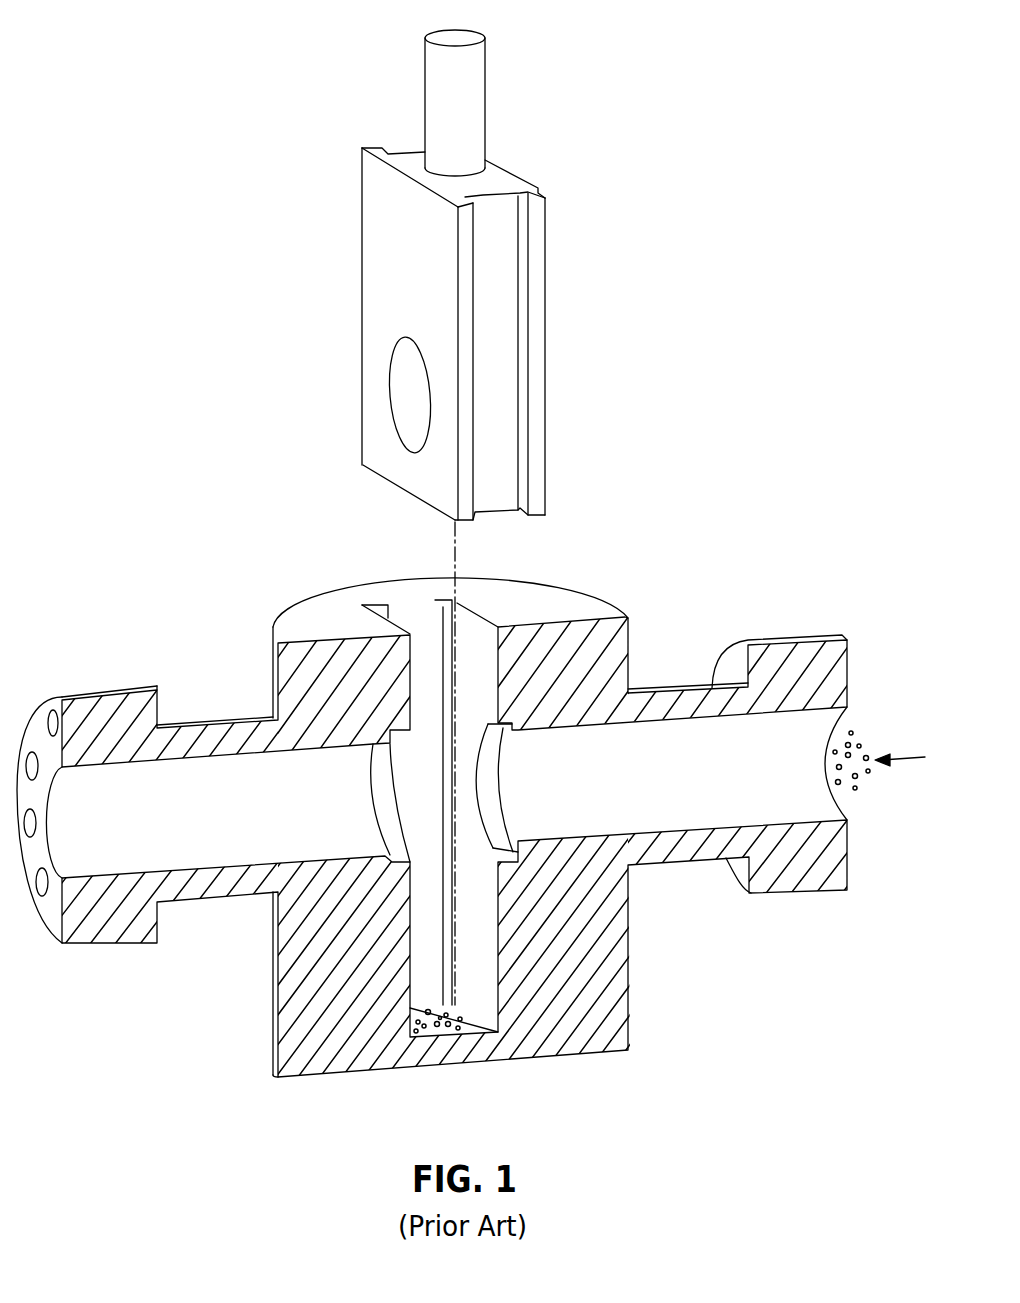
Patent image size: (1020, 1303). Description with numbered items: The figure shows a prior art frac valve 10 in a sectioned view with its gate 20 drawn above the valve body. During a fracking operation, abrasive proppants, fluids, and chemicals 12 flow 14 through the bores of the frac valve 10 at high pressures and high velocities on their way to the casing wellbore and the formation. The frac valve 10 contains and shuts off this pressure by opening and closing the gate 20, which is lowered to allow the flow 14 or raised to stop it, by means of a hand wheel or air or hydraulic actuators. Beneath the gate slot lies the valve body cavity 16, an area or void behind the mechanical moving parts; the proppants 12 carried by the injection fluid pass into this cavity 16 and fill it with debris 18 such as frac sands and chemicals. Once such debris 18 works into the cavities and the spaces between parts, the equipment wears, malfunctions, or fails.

The frac valve 10 is at (255, 1005).
The abrasive proppants, fluids, and chemicals 12 is at (853, 773).
The flow 14 is at (915, 757).
The valve body cavity 16 is at (487, 1010).
The debris 18 is at (453, 1027).
The gate 20 is at (545, 437).